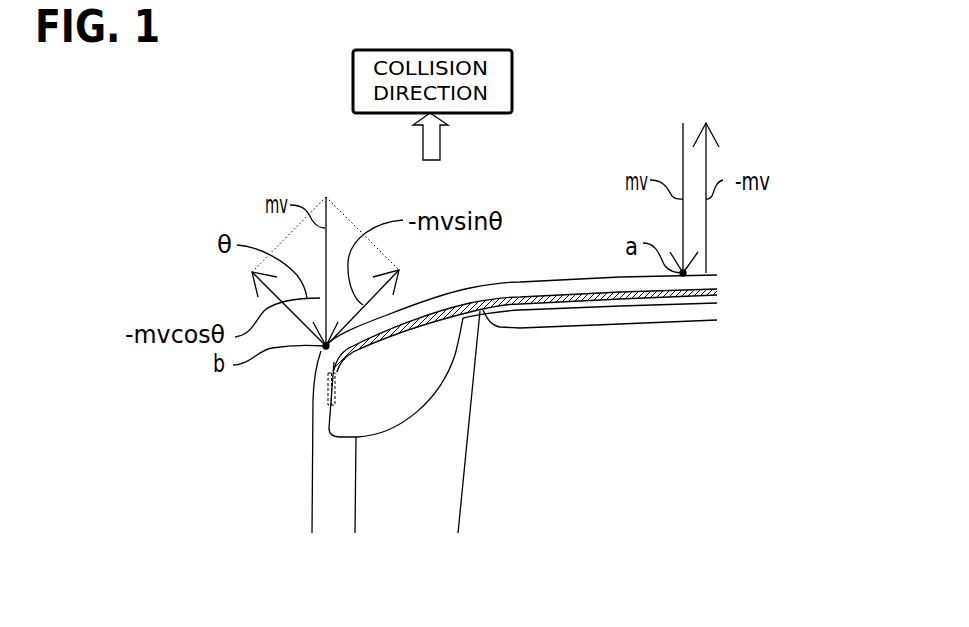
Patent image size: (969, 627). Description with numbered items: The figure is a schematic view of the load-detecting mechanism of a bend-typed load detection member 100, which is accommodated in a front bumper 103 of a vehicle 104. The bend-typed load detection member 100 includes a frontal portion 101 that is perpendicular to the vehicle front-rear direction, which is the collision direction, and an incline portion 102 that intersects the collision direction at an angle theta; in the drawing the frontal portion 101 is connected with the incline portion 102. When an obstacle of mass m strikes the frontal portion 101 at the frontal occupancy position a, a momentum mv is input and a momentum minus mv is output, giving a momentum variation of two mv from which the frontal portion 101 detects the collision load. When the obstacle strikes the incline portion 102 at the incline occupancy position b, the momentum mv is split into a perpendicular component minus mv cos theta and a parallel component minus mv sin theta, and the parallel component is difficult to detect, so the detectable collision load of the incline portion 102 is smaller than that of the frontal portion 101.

The bend-typed load detection member 100 is at (560, 217).
The frontal portion 101 is at (629, 288).
The incline portion 102 is at (322, 353).
The front bumper 103 is at (560, 277).
The vehicle 104 is at (312, 483).